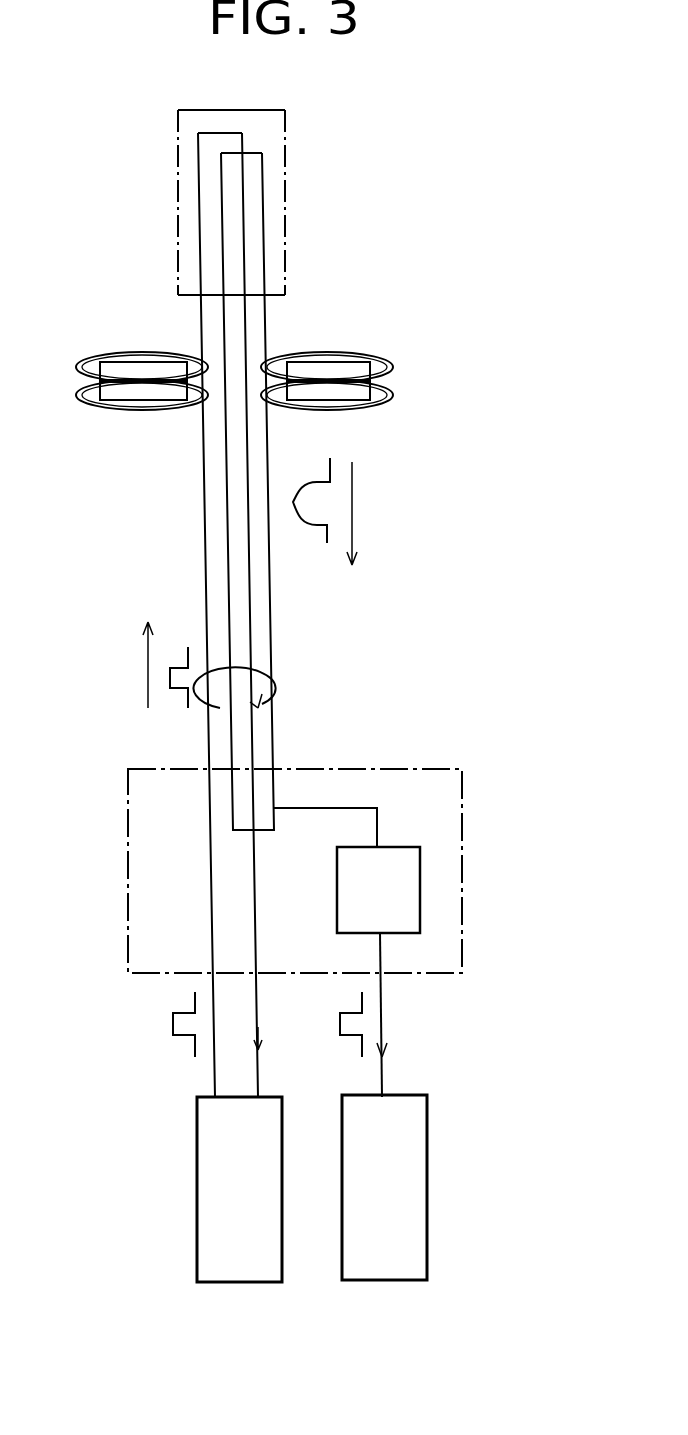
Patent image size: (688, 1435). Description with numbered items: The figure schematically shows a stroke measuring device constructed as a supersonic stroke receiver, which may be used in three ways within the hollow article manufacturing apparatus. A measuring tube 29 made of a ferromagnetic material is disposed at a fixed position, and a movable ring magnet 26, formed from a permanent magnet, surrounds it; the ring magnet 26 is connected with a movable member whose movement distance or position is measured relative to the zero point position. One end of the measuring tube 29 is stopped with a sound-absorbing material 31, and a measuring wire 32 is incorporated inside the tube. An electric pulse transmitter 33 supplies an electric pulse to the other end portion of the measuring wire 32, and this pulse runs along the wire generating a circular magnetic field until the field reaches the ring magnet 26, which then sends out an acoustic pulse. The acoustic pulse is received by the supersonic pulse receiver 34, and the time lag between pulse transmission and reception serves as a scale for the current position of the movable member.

The sound-absorbing material 31 is at (273, 212).
The ring magnet 26 is at (323, 377).
The measuring tube 29 is at (275, 735).
The measuring wire 32 is at (250, 743).
The electric pulse transmitter 33 is at (242, 1270).
The supersonic pulse receiver 34 is at (382, 1262).